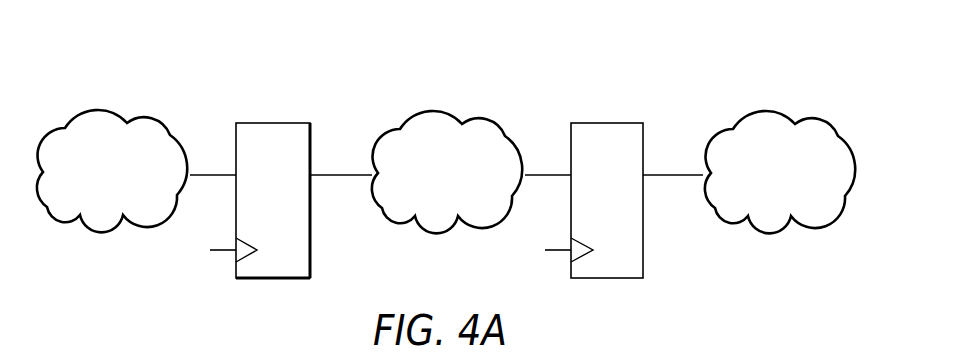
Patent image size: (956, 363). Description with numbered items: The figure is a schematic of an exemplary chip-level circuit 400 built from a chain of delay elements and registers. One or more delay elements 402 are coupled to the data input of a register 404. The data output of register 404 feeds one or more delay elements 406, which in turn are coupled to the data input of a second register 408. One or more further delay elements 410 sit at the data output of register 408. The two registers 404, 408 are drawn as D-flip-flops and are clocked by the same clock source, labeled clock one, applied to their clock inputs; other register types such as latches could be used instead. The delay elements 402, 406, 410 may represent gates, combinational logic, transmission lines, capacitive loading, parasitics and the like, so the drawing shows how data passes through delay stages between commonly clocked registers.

The chip-level circuit 400 is at (543, 49).
The delay element(s) 402 is at (100, 108).
The register 404 is at (257, 123).
The delay element(s) 406 is at (442, 110).
The register 408 is at (593, 123).
The delay element(s) 410 is at (762, 109).